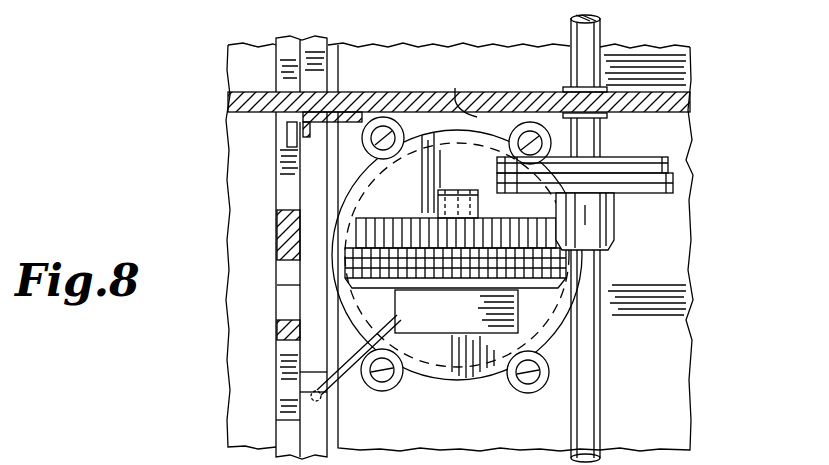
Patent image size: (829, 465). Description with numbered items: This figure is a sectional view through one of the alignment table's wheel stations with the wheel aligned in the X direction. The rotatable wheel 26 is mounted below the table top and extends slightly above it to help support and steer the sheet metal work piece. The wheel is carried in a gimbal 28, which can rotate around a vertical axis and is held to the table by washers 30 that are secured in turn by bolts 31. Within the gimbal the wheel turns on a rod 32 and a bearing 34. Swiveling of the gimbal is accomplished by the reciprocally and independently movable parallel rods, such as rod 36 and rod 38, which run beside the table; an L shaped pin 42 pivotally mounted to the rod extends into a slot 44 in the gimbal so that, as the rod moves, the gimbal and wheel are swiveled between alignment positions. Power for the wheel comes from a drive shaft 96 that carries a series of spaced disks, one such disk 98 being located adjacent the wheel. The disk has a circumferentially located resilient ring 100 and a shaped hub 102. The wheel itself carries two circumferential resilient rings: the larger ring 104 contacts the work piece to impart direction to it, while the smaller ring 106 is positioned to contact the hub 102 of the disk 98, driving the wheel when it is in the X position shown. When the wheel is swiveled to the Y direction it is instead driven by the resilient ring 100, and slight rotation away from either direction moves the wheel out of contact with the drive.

The rotatable wheel 26 is at (356, 214).
The gimbal 28 is at (564, 321).
The washers 30 is at (462, 90).
The bolts 31 is at (530, 133).
The rod 32 is at (466, 188).
The bearing 34 is at (438, 198).
The parallel rod 36 is at (312, 372).
The parallel rod 38 is at (286, 417).
The L shaped pin 42 is at (346, 373).
The slot 44 is at (429, 371).
The drive shaft 96 is at (601, 420).
The disk 98 is at (670, 162).
The resilient ring 100 is at (674, 176).
The shaped hub 102 is at (613, 227).
The larger resilient ring 104 is at (350, 263).
The smaller resilient ring 106 is at (357, 247).